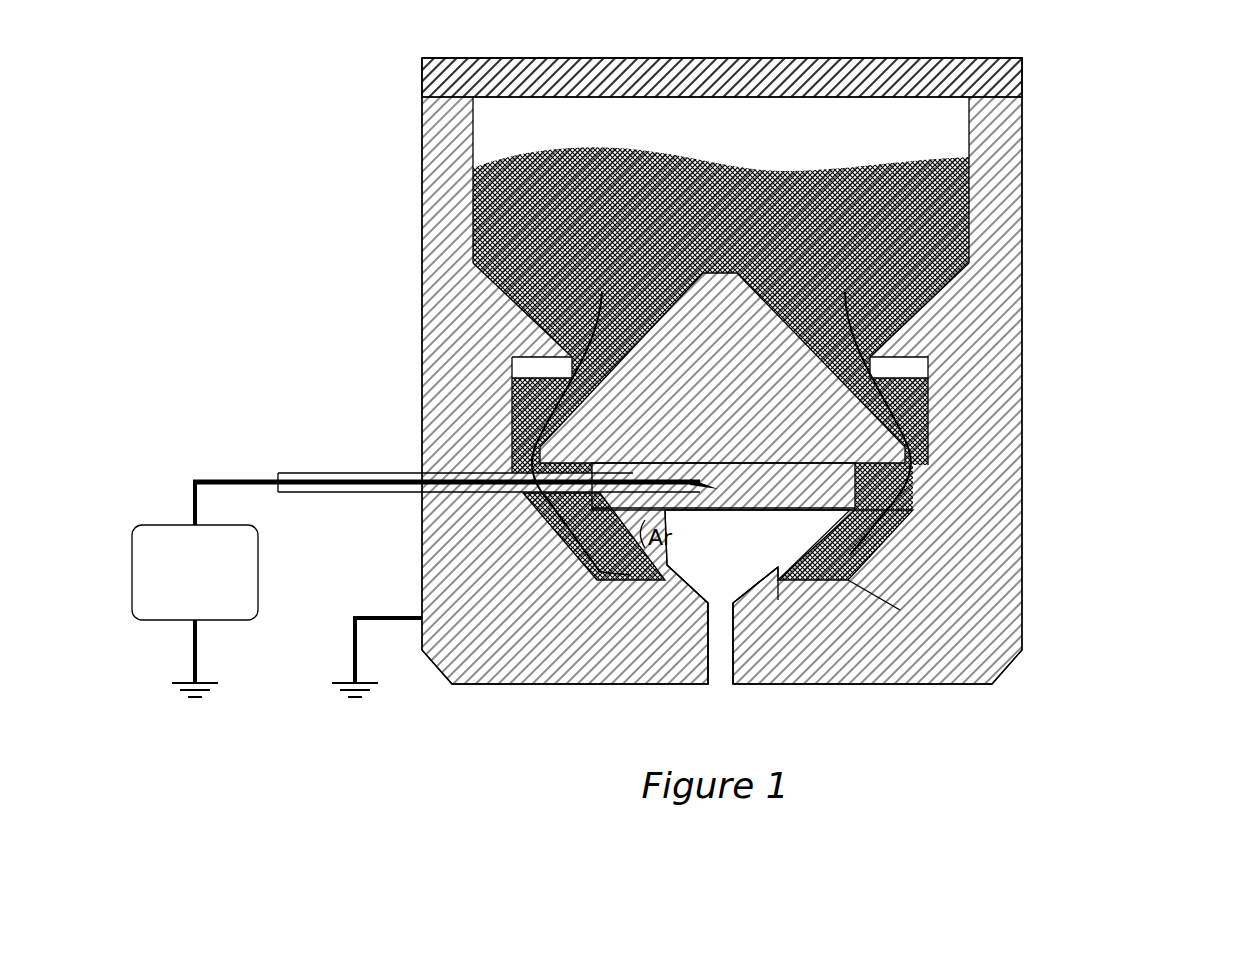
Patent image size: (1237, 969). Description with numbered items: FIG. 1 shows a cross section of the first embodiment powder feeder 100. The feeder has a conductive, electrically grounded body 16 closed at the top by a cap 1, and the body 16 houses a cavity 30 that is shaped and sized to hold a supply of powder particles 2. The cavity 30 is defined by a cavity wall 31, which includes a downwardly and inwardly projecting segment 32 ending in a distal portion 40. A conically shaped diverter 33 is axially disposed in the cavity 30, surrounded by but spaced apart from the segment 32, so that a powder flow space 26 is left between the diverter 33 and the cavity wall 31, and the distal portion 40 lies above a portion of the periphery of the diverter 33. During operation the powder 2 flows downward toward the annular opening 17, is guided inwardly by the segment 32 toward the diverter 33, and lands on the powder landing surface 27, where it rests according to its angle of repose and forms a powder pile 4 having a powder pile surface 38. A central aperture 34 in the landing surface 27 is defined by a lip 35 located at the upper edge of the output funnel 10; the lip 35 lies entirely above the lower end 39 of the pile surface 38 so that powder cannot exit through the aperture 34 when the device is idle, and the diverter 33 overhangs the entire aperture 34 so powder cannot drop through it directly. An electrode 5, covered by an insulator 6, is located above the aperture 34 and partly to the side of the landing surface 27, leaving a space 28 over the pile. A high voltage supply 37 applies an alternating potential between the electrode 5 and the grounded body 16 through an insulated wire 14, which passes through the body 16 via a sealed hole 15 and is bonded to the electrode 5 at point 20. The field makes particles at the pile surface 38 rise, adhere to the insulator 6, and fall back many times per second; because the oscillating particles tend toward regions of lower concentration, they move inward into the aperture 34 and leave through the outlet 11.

The feeder 100 is at (1112, 100).
The cap 1 is at (457, 82).
The powder particles 2 is at (500, 178).
The powder pile 4 is at (535, 552).
The electrode 5 is at (928, 377).
The insulator 6 is at (885, 437).
The output funnel 10 is at (774, 567).
The outlet 11 is at (718, 683).
The insulated wire 14 is at (330, 473).
The sealed hole 15 is at (440, 492).
The body 16 is at (1020, 212).
The annular opening 17 is at (910, 292).
The bonding point 20 is at (515, 423).
The powder flow space 26 is at (545, 390).
The powder landing surface 27 is at (630, 575).
The space 28 is at (860, 545).
The cavity 30 is at (898, 130).
The cavity wall 31 is at (473, 207).
The downwardly and inwardly projecting segment 32 is at (493, 297).
The diverter 33 is at (724, 332).
The aperture 34 is at (720, 570).
The lip 35 is at (777, 595).
The high voltage supply 37 is at (162, 527).
The powder pile surface 38 is at (855, 588).
The lower end of powder pile surface 39 is at (783, 567).
The distal portion 40 is at (570, 355).